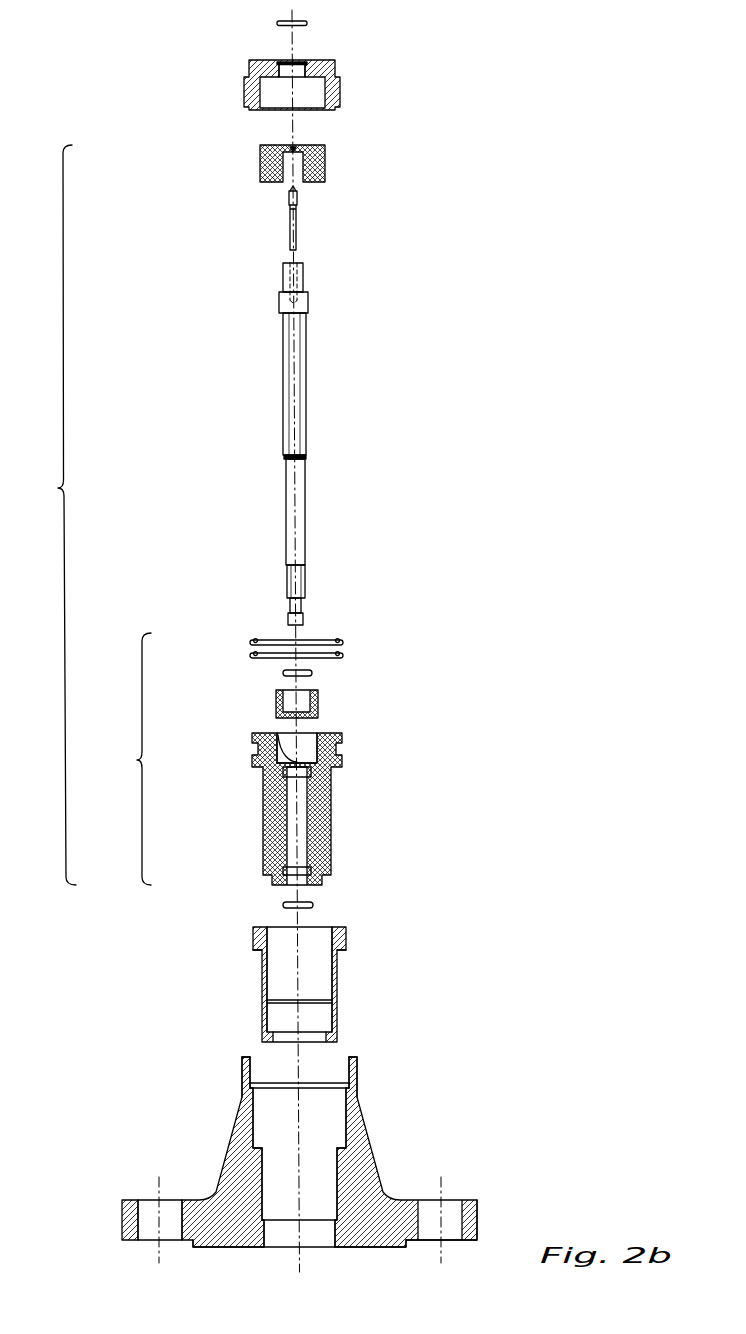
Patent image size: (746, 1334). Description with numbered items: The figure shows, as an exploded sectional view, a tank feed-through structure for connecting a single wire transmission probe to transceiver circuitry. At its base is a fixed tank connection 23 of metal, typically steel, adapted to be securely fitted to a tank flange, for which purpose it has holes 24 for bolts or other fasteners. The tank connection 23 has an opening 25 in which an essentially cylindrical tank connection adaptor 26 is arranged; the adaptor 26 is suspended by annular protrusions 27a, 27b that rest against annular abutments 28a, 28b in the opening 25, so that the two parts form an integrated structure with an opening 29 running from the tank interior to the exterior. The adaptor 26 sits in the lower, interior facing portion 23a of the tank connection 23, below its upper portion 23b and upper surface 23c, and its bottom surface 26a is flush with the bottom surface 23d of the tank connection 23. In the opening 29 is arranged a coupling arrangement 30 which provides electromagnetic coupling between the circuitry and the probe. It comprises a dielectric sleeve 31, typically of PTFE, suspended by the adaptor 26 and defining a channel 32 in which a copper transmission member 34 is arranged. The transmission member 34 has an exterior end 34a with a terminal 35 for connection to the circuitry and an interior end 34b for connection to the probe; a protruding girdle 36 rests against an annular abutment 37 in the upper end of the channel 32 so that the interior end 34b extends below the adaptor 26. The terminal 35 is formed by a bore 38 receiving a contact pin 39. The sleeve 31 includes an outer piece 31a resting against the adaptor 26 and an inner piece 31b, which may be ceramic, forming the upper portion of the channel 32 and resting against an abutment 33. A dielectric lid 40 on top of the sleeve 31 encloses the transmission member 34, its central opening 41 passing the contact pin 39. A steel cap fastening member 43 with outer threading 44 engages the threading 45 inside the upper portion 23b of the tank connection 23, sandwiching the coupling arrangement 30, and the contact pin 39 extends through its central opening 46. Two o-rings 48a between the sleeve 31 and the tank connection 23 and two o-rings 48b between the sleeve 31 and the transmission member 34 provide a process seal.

The fixed tank connection 23 is at (230, 1200).
The lower (interior facing) portion 23a is at (330, 1232).
The bore section 23b is at (352, 1100).
The upper surface 23c is at (347, 1058).
The bottom surface 23d is at (383, 1247).
The holes 24 is at (148, 1213).
The opening 25 is at (325, 1053).
The tank connection adaptor 26 is at (338, 968).
The bottom surface 26a is at (243, 1075).
The annular protrusion 27a is at (262, 1027).
The annular protrusion 27b is at (258, 967).
The annular abutment 28a is at (266, 1222).
The annular abutment 28b is at (264, 1130).
The opening 29 is at (315, 940).
The coupling arrangement 30 is at (49, 515).
The dielectric sleeve 31 is at (125, 759).
The outer piece 31a is at (330, 822).
The inner piece 31b is at (318, 700).
The channel 32 is at (308, 742).
The abutment 33 is at (292, 753).
The transmission member 34 is at (306, 385).
The exterior end 34a is at (305, 278).
The interior end 34b is at (305, 610).
The terminal 35 is at (268, 233).
The protruding girdle 36 is at (306, 457).
The annular abutment 37 is at (281, 677).
The bore 38 is at (292, 262).
The contact pin 39 is at (298, 230).
The dielectric lid 40 is at (318, 165).
The central opening 41 is at (294, 147).
The fastening member 43 is at (318, 66).
The outer threading 44 is at (245, 90).
The threading 45 is at (347, 1073).
The central opening 46 is at (293, 45).
The o-rings 48a is at (343, 640).
The o-rings 48b is at (283, 905).